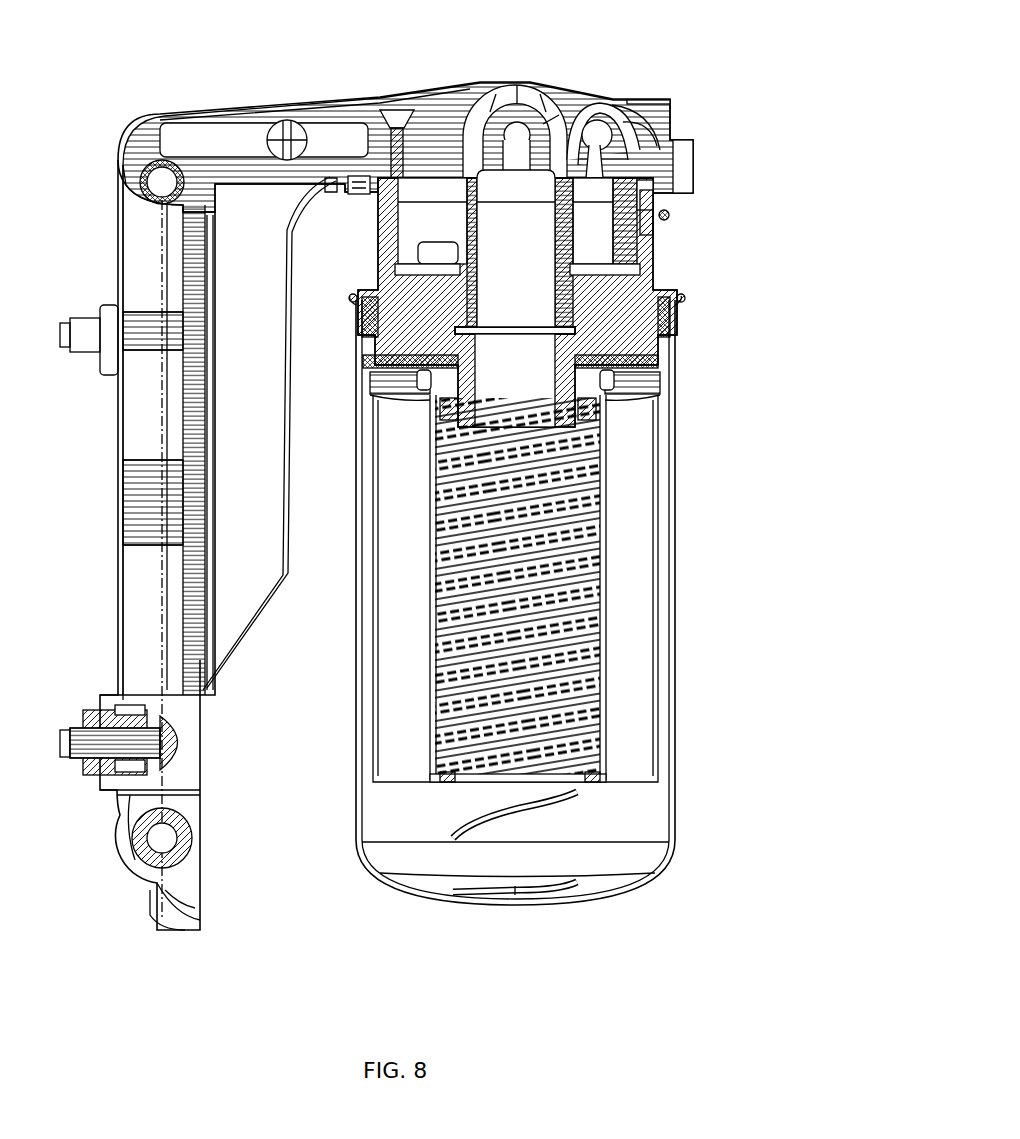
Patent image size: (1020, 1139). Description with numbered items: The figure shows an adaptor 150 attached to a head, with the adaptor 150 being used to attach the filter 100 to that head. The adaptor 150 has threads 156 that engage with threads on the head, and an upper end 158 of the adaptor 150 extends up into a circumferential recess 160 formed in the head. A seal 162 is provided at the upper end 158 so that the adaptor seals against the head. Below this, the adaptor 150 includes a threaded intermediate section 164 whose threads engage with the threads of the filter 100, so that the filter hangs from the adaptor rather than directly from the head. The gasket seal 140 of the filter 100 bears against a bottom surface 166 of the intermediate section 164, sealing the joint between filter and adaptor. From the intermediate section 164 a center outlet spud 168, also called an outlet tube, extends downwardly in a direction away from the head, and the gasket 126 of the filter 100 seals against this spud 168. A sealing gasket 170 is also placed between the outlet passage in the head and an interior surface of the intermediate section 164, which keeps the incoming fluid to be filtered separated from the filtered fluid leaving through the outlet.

The filter 100 is at (466, 600).
The gasket 126 is at (452, 420).
The gasket seal 140 is at (398, 357).
The adaptor 150 is at (486, 298).
The threads 156 is at (382, 245).
The upper end 158 is at (347, 177).
The circumferential recess 160 is at (650, 172).
The seal 162 is at (368, 172).
The threaded intermediate section 164 is at (412, 326).
The bottom surface 166 is at (430, 397).
The center outlet spud 168 is at (473, 385).
The sealing gasket 170 is at (474, 304).